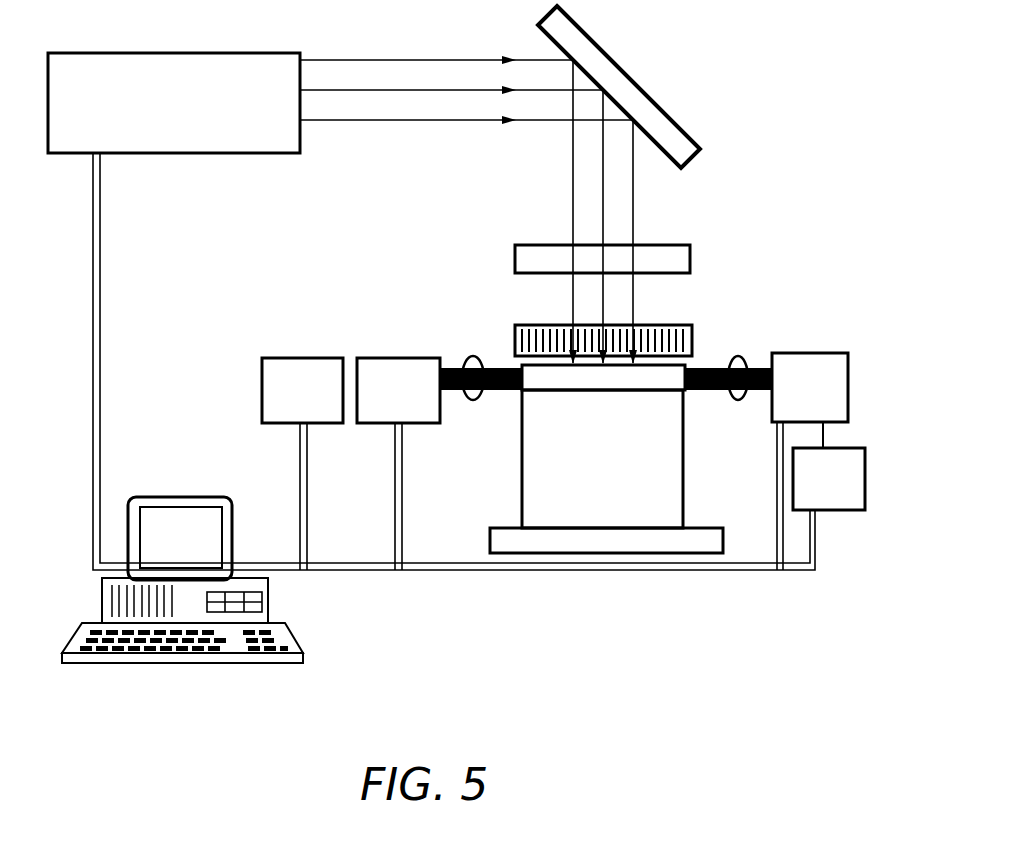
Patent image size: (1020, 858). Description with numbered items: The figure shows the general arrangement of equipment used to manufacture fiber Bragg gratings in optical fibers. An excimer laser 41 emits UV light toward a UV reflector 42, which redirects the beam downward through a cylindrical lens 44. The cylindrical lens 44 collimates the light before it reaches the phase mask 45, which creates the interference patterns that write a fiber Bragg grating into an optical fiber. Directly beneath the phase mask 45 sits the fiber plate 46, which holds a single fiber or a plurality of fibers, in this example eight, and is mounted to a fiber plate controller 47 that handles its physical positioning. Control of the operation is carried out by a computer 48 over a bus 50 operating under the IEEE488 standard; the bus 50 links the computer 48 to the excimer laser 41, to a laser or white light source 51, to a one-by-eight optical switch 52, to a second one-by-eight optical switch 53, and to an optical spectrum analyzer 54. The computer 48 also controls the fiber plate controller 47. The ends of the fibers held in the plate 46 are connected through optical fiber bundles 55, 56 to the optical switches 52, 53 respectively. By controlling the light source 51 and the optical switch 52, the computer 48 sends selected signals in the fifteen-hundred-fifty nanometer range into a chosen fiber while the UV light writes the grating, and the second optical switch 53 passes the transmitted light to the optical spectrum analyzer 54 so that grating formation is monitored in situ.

The excimer laser 41 is at (240, 53).
The UV reflector 42 is at (590, 53).
The cylindrical lens 44 is at (527, 260).
The phase mask 45 is at (670, 328).
The fiber plate 46 is at (672, 387).
The fiber plate controller 47 is at (535, 437).
The computer 48 is at (281, 584).
The bus 50 is at (100, 278).
The laser or white light source 51 is at (290, 358).
The 1×8 optical switch 52 is at (392, 358).
The second 1×8 optical switch 53 is at (810, 353).
The optical spectrum analyzer 54 is at (840, 500).
The optical fiber bundle 55 is at (473, 355).
The optical fiber bundle 56 is at (738, 356).